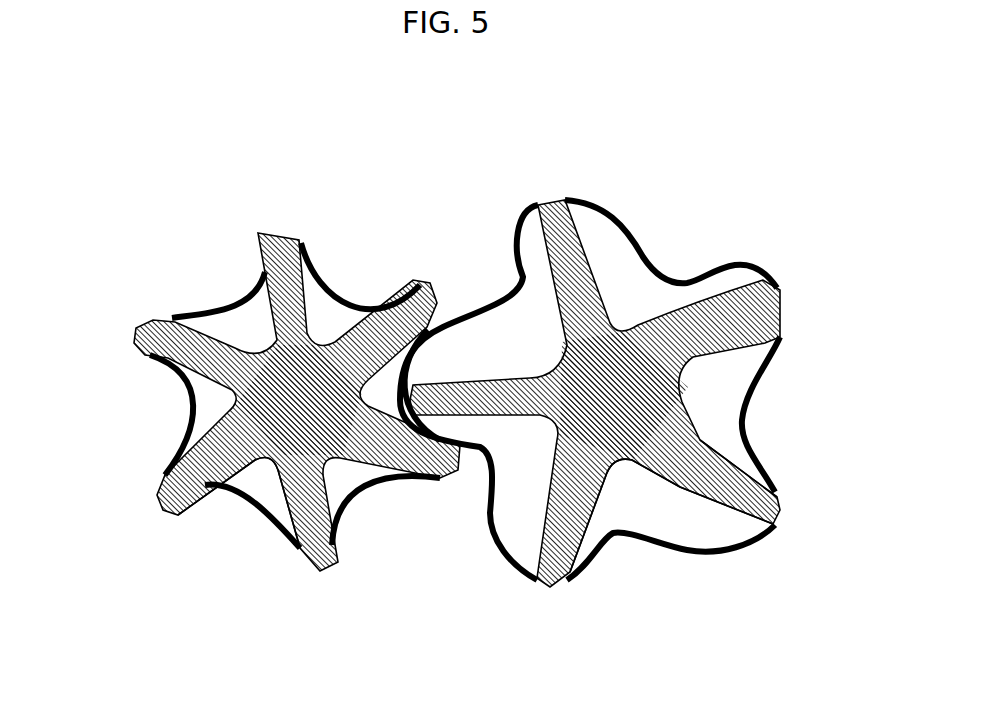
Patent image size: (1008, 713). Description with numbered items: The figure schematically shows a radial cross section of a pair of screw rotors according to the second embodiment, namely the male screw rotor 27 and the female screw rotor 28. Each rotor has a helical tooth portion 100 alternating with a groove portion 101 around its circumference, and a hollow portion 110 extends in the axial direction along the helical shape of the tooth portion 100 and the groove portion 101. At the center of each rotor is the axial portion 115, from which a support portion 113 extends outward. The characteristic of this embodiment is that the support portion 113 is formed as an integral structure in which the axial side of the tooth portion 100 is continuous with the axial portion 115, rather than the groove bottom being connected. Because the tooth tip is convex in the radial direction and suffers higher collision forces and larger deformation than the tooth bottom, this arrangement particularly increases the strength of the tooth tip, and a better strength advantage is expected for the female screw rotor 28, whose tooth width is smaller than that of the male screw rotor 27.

The male screw rotor 27 is at (727, 130).
The female screw rotor 28 is at (152, 132).
The tooth portion 100 is at (140, 328).
The groove portion 101 is at (233, 303).
The hollow portion 110 is at (247, 470).
The support portion 113 is at (193, 383).
The axial portion 115 is at (302, 415).